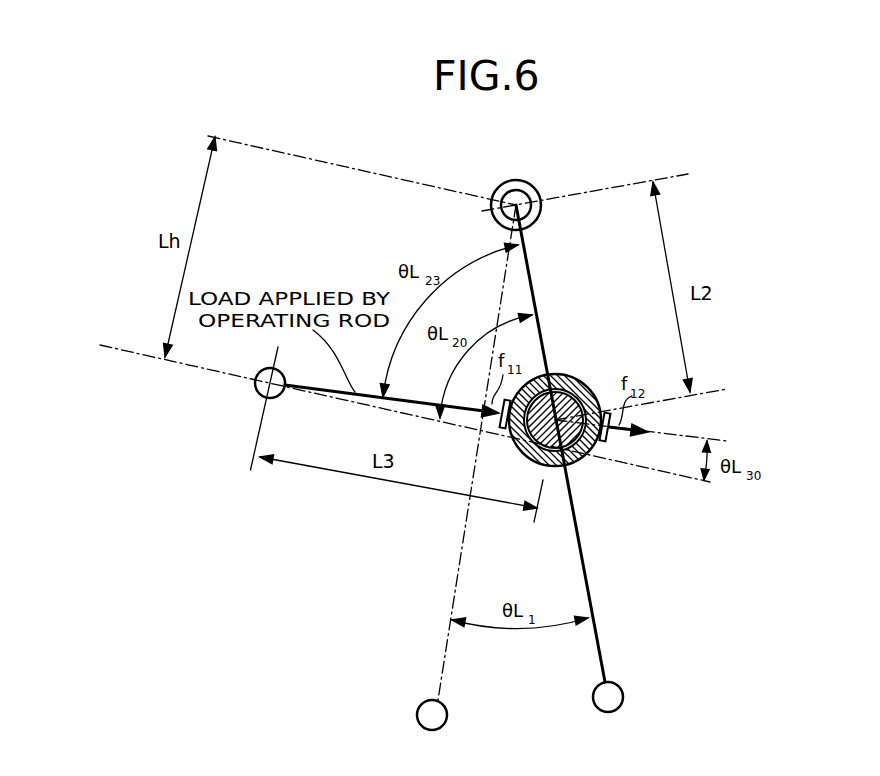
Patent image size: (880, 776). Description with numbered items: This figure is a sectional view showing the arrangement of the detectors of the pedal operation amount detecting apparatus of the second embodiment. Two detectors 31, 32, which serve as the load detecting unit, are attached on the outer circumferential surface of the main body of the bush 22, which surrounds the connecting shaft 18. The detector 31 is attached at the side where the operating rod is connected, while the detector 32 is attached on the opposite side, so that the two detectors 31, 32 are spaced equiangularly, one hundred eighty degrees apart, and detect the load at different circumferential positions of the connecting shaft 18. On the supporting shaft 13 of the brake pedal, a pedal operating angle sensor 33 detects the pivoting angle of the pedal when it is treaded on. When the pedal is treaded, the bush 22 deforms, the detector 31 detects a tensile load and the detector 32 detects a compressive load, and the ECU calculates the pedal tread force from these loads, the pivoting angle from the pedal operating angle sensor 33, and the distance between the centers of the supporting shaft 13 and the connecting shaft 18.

The supporting shaft 13 is at (535, 187).
The pedal operating angle sensor 33 is at (516, 203).
The bush 22 is at (573, 374).
The connecting shaft 18 is at (593, 453).
The detector 31 is at (498, 432).
The detector 32 is at (609, 443).